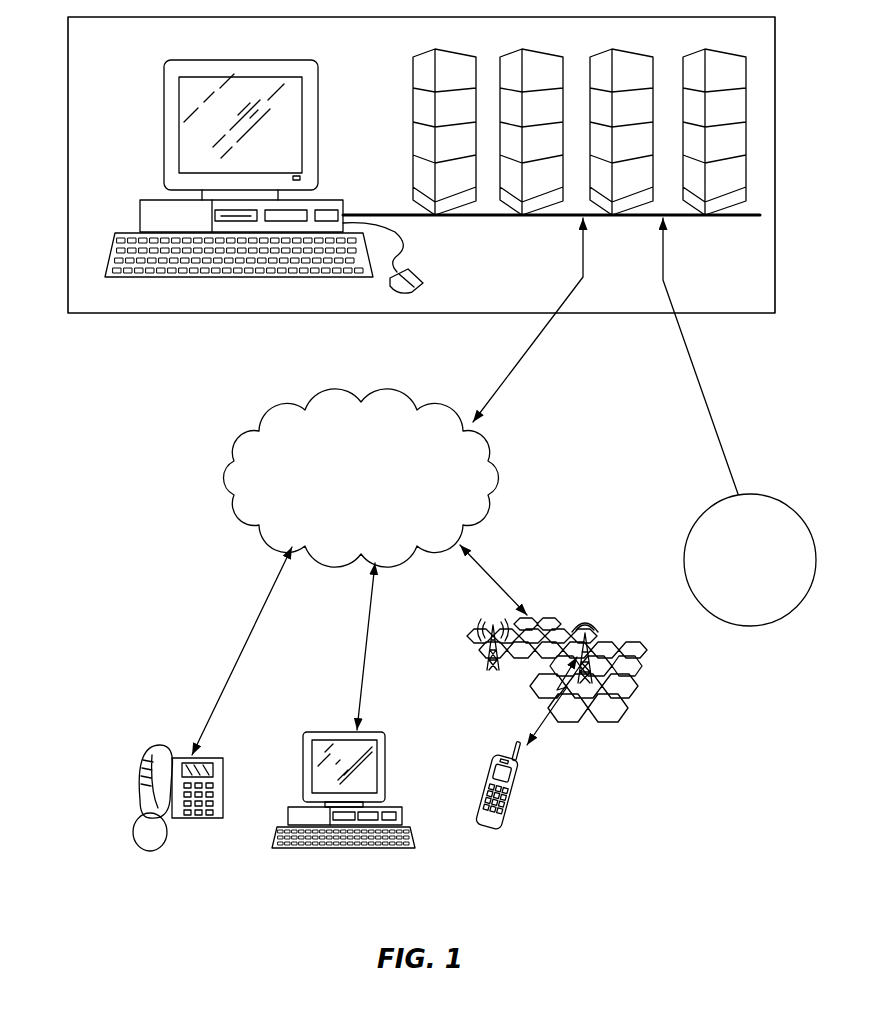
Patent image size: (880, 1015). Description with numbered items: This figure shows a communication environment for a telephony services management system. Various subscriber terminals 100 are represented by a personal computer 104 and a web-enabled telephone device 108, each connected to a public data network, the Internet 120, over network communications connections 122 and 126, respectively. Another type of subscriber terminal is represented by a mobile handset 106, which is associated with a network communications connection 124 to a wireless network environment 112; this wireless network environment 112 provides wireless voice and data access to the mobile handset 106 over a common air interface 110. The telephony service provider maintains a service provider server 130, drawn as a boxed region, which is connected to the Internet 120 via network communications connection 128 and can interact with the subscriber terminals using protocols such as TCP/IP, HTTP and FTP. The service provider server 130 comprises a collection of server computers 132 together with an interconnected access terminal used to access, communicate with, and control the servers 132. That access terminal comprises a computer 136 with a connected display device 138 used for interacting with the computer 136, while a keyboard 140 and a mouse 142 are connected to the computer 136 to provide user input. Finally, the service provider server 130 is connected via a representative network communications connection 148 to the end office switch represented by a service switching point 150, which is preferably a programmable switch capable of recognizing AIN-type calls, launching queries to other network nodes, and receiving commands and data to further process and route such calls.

The subscriber terminals 100 is at (97, 769).
The personal computer 104 is at (396, 768).
The mobile handset 106 is at (514, 806).
The web-enabled telephone device 108 is at (216, 747).
The common air interface 110 is at (541, 735).
The wireless network environment 112 is at (617, 660).
The Internet 120 is at (347, 508).
The network communications connection 122 is at (370, 646).
The network communications connection 124 is at (493, 580).
The network communications connection 126 is at (250, 633).
The network communications connection 128 is at (539, 352).
The service provider server 130 is at (128, 61).
The server computers 132 is at (752, 101).
The computer 136 is at (323, 200).
The display device 138 is at (164, 118).
The keyboard 140 is at (110, 250).
The mouse 142 is at (405, 265).
The network communications connection 148 is at (707, 405).
The service switching point 150 is at (731, 587).